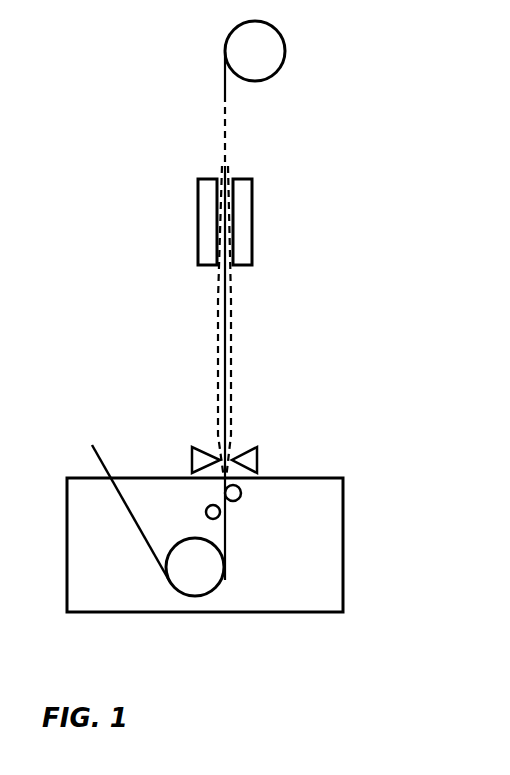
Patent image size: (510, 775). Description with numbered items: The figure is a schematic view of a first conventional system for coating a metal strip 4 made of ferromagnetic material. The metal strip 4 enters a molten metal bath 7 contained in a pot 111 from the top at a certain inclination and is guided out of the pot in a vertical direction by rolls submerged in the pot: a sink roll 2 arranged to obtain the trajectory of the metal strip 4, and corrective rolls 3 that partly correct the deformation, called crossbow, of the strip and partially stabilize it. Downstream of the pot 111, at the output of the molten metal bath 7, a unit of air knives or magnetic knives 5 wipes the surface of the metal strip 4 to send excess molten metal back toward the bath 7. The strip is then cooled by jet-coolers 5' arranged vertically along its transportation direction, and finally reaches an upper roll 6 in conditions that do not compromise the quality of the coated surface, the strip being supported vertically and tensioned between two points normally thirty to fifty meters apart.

The sink roll 2 is at (170, 591).
The corrective rolls 3 is at (248, 507).
The metal strip 4 is at (231, 331).
The magnetic knives 5 is at (253, 441).
The jet-coolers 5' is at (266, 229).
The upper roll 6 is at (257, 82).
The molten metal bath 7 is at (273, 586).
The pot 111 is at (347, 605).